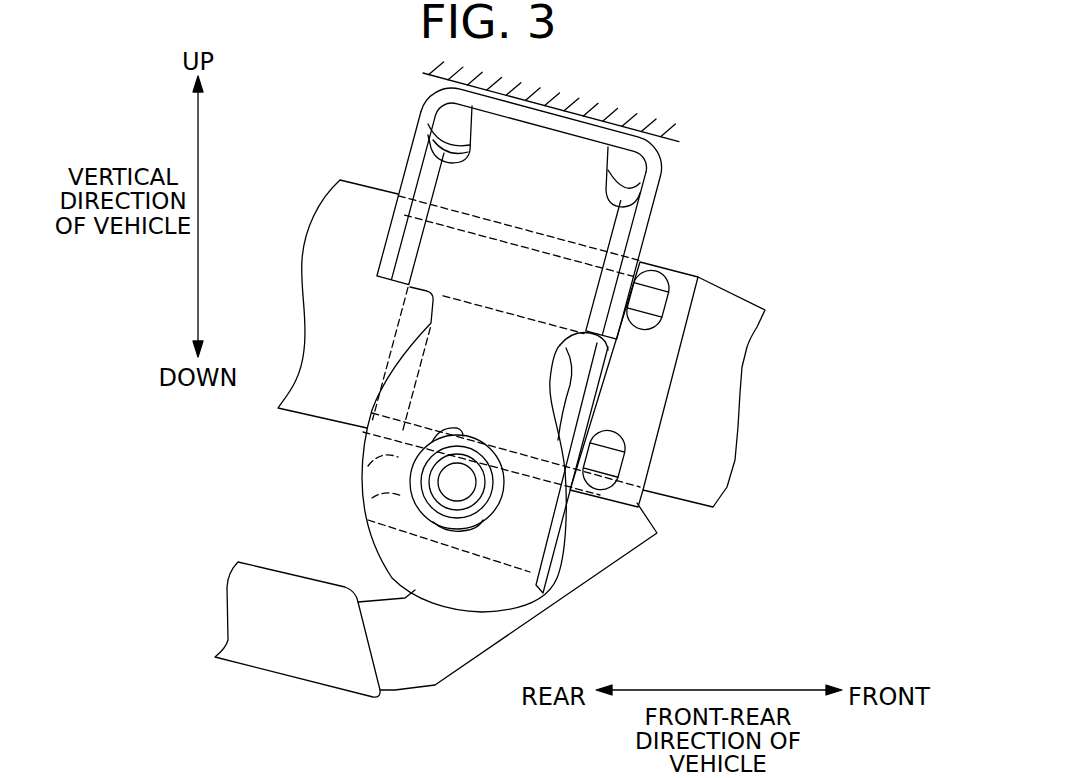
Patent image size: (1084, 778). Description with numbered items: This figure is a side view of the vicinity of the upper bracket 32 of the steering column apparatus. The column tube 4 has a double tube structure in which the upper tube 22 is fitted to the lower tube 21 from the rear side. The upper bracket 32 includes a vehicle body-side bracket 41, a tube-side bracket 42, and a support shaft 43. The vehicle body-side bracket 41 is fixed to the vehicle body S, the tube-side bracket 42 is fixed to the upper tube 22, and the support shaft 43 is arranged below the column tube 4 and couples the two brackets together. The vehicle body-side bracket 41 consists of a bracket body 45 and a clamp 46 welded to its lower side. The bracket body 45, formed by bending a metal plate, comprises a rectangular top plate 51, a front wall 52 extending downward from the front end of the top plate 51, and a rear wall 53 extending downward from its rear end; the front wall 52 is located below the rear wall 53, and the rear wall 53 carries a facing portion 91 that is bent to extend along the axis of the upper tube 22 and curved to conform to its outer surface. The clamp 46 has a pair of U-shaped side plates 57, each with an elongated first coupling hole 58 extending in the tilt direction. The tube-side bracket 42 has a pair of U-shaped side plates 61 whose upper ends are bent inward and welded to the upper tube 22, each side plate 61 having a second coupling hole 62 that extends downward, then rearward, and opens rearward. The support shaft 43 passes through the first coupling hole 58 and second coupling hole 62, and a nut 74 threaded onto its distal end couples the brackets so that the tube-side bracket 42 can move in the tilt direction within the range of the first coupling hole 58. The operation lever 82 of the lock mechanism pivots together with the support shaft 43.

The column tube 4 is at (753, 293).
The lower tube 21 is at (748, 378).
The upper tube 22 is at (307, 256).
The upper bracket 32 is at (300, 143).
The vehicle body-side bracket 41 is at (566, 210).
The tube-side bracket 42 is at (538, 588).
The support shaft 43 is at (461, 477).
The bracket body 45 is at (665, 176).
The clamp 46 is at (654, 222).
The top plate 51 is at (612, 113).
The front wall 52 is at (645, 252).
The rear wall 53 is at (421, 131).
The side plate 57 is at (391, 376).
The first coupling hole 58 is at (457, 432).
The side plate 61 is at (367, 466).
The second coupling hole 62 is at (371, 496).
The nut 74 is at (483, 503).
The operation lever 82 is at (222, 602).
The facing portion 91 is at (452, 148).
The vehicle body S is at (673, 128).